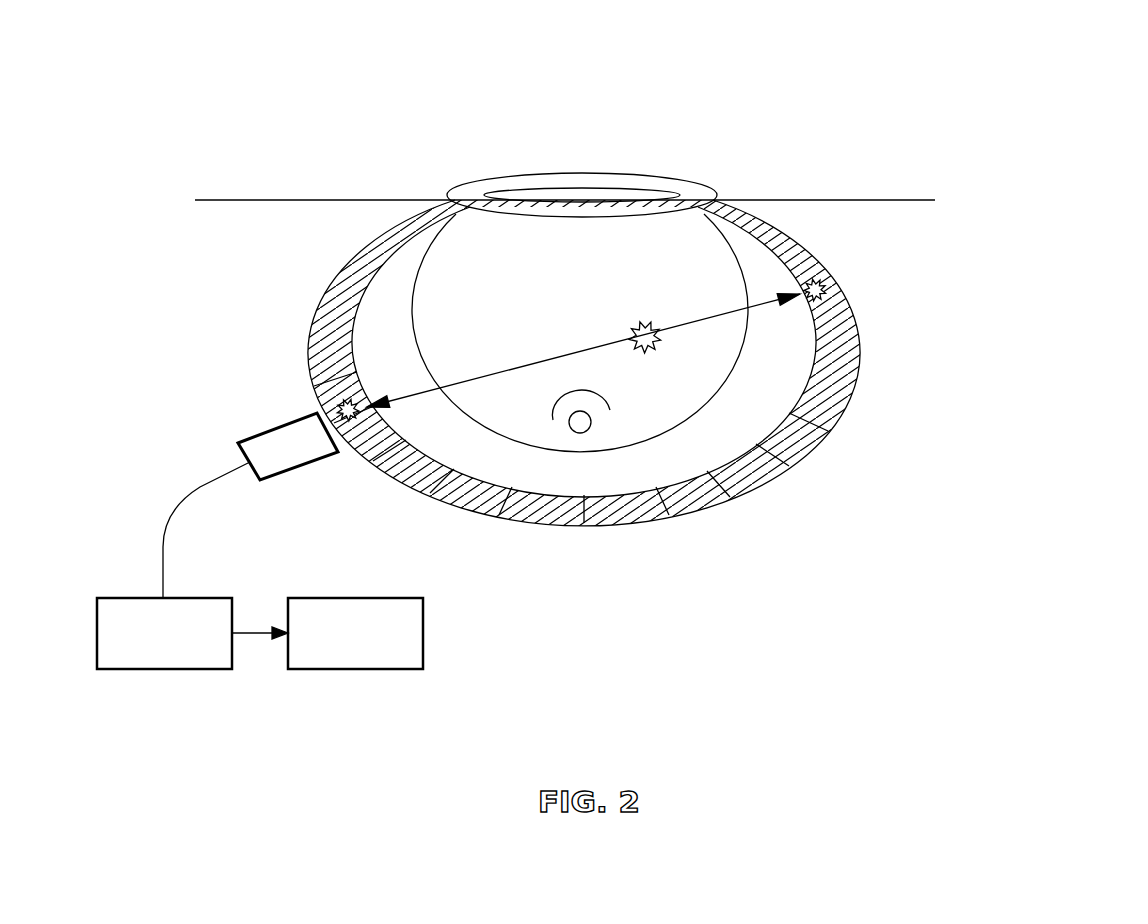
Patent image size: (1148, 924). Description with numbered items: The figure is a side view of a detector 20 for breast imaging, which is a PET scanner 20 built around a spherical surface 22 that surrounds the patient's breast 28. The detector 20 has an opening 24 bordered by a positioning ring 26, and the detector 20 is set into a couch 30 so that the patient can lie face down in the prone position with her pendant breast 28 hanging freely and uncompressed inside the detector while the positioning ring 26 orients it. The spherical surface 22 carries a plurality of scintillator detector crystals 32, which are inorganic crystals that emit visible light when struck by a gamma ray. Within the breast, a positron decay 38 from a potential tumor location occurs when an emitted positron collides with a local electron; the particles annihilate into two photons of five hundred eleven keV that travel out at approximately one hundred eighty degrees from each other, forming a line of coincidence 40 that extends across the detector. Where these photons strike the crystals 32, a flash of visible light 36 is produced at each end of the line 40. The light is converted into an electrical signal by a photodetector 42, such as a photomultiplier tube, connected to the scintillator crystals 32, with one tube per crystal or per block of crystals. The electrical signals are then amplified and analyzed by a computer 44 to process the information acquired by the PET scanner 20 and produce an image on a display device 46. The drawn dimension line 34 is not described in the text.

The detector 20 is at (182, 95).
The spherical surface 22 is at (665, 505).
The opening 24 is at (632, 193).
The positioning ring 26 is at (473, 190).
The patient's breast 28 is at (760, 378).
The couch 30 is at (837, 218).
The scintillator detector crystals 32 is at (425, 488).
The detection path 34 is at (733, 308).
The flash of visible light 36 is at (818, 284).
The positron decay 38 is at (642, 352).
The line of coincidence 40 is at (507, 372).
The photodetector 42 is at (260, 435).
The computer 44 is at (197, 669).
The display device 46 is at (325, 669).